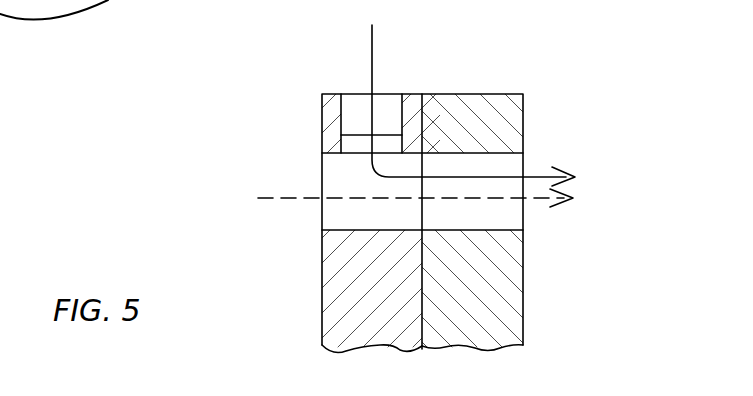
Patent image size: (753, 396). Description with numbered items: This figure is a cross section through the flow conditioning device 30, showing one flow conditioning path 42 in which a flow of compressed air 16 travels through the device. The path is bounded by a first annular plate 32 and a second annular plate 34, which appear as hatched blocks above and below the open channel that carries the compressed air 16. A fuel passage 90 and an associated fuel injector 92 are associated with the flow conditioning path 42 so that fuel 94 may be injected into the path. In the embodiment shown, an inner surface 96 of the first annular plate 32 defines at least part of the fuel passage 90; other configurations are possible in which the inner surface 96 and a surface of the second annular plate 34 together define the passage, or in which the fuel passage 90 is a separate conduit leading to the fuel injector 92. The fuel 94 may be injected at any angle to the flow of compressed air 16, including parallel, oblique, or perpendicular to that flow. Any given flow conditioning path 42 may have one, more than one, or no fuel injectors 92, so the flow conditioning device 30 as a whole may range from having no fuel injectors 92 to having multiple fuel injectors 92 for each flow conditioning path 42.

The flow conditioning device 30 is at (550, 58).
The compressed air 16 is at (276, 200).
The first annular plate 32 is at (322, 300).
The second annular plate 34 is at (523, 300).
The flow conditioning path 42 is at (359, 229).
The fuel passage 90 is at (359, 106).
The fuel injector 92 is at (355, 146).
The fuel 94 is at (372, 42).
The inner surface 96 is at (402, 118).